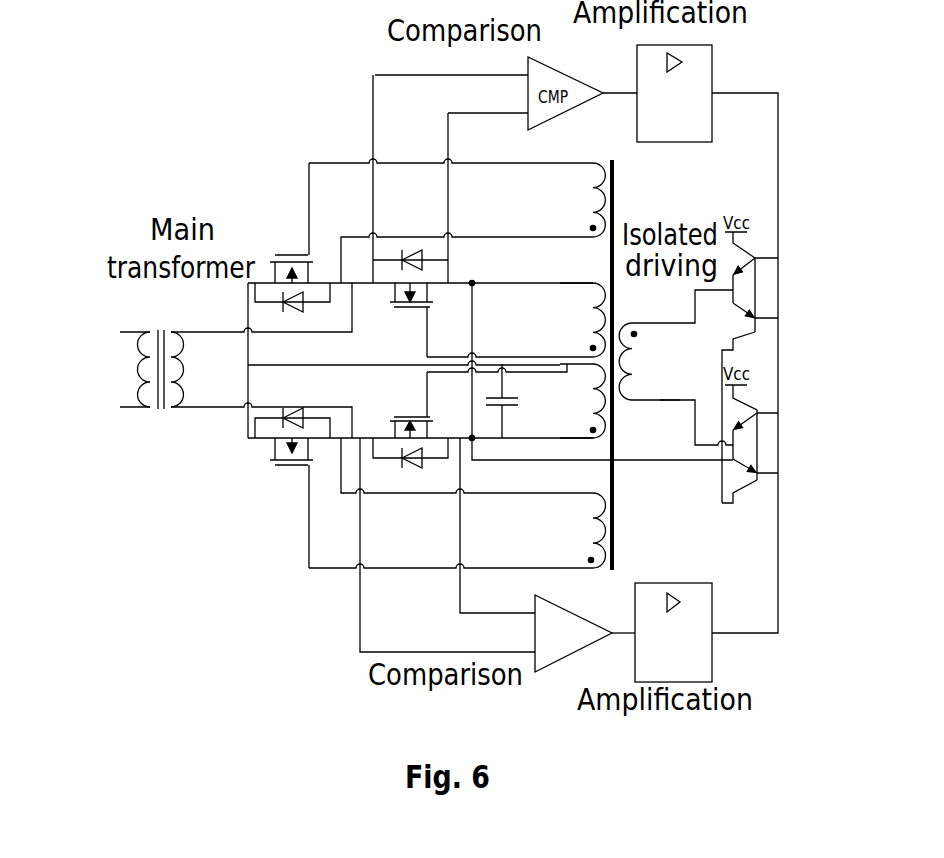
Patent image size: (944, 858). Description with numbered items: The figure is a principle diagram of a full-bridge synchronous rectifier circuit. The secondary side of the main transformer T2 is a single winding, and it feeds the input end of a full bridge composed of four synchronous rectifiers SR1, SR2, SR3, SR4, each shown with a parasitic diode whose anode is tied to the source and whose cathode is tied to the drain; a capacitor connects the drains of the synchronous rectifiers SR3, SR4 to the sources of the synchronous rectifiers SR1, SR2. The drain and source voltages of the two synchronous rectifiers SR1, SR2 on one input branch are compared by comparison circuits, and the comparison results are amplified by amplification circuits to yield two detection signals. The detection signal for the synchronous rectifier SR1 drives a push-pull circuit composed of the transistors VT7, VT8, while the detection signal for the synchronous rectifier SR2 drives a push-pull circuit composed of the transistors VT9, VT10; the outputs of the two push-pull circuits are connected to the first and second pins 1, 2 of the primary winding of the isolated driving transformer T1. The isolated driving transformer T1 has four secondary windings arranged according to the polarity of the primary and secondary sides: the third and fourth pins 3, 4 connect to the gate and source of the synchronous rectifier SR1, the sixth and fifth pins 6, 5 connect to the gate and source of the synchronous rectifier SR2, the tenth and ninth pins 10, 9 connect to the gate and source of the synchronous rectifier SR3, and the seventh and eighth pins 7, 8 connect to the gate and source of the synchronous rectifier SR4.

The synchronous rectifier SR1 is at (463, 303).
The synchronous rectifier SR2 is at (470, 447).
The synchronous rectifier SR3 is at (290, 237).
The synchronous rectifier SR4 is at (282, 488).
The isolated driving transformer T1 is at (646, 365).
The main transformer T2 is at (236, 360).
The transistor of push-pull circuit VT7 is at (751, 282).
The transistor of push-pull circuit VT8 is at (751, 417).
The transistor of push-pull circuit VT9 is at (751, 432).
The transistor of push-pull circuit VT10 is at (749, 498).
The first pin of primary winding 1 is at (646, 337).
The second pin of primary winding 2 is at (665, 389).
The third pin of isolated driving transformer 3 is at (578, 340).
The fourth pin of isolated driving transformer 4 is at (576, 294).
The fifth pin of isolated driving transformer 5 is at (578, 422).
The sixth pin of isolated driving transformer 6 is at (576, 375).
The seventh pin of isolated driving transformer 7 is at (577, 559).
The eighth pin of isolated driving transformer 8 is at (576, 508).
The ninth pin of isolated driving transformer 9 is at (578, 226).
The tenth pin of isolated driving transformer 10 is at (576, 177).